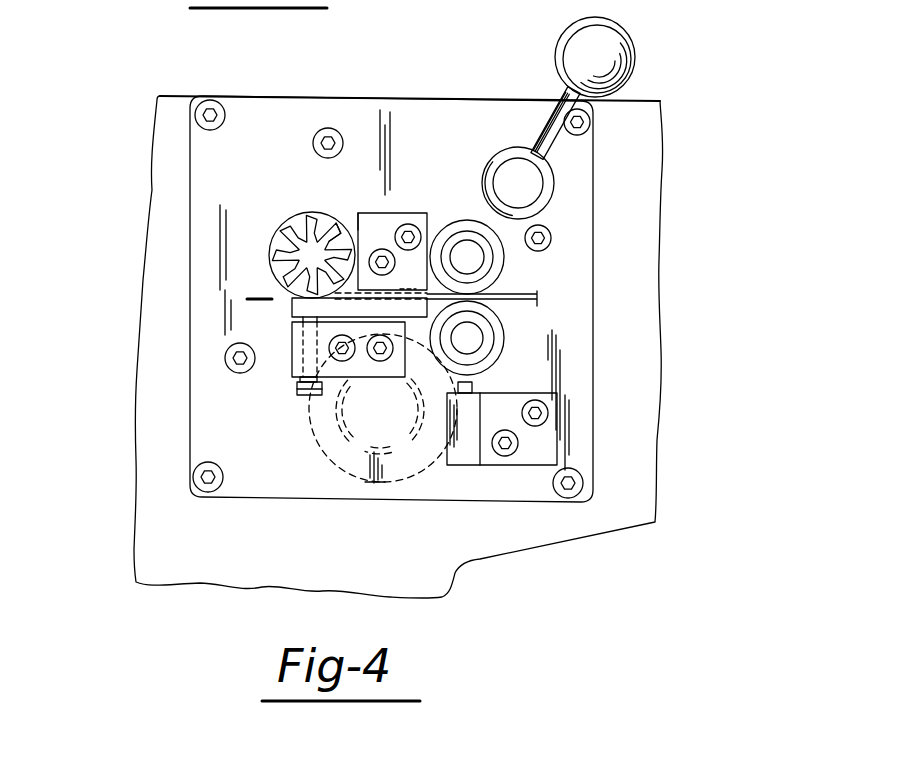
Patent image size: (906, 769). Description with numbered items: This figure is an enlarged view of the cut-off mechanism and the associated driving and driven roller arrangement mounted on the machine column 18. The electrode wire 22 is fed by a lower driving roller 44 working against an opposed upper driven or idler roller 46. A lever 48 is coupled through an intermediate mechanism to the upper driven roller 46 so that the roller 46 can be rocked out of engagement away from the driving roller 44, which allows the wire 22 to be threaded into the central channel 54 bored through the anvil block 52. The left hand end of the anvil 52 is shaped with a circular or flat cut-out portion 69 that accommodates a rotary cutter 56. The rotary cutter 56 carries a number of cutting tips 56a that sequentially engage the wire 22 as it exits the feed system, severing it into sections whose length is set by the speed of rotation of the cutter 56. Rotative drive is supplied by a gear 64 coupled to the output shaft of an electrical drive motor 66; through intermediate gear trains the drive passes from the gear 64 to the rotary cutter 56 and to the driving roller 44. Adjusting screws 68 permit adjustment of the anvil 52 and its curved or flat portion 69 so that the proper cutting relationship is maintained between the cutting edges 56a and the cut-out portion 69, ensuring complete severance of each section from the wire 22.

The machine column 18 is at (193, 90).
The electrode wire 22 is at (257, 298).
The lower driving roller 44 is at (507, 335).
The driven or idler roller 46 is at (552, 234).
The lever 48 is at (625, 27).
The anvil 52 is at (405, 213).
The central channel 54 is at (408, 290).
The rotary cutter 56 is at (297, 213).
The cutting tips 56a is at (343, 222).
The gear 64 is at (362, 443).
The electrical drive motor 66 is at (372, 460).
The adjusting screws 68 is at (330, 352).
The cut-out portion 69 is at (360, 213).